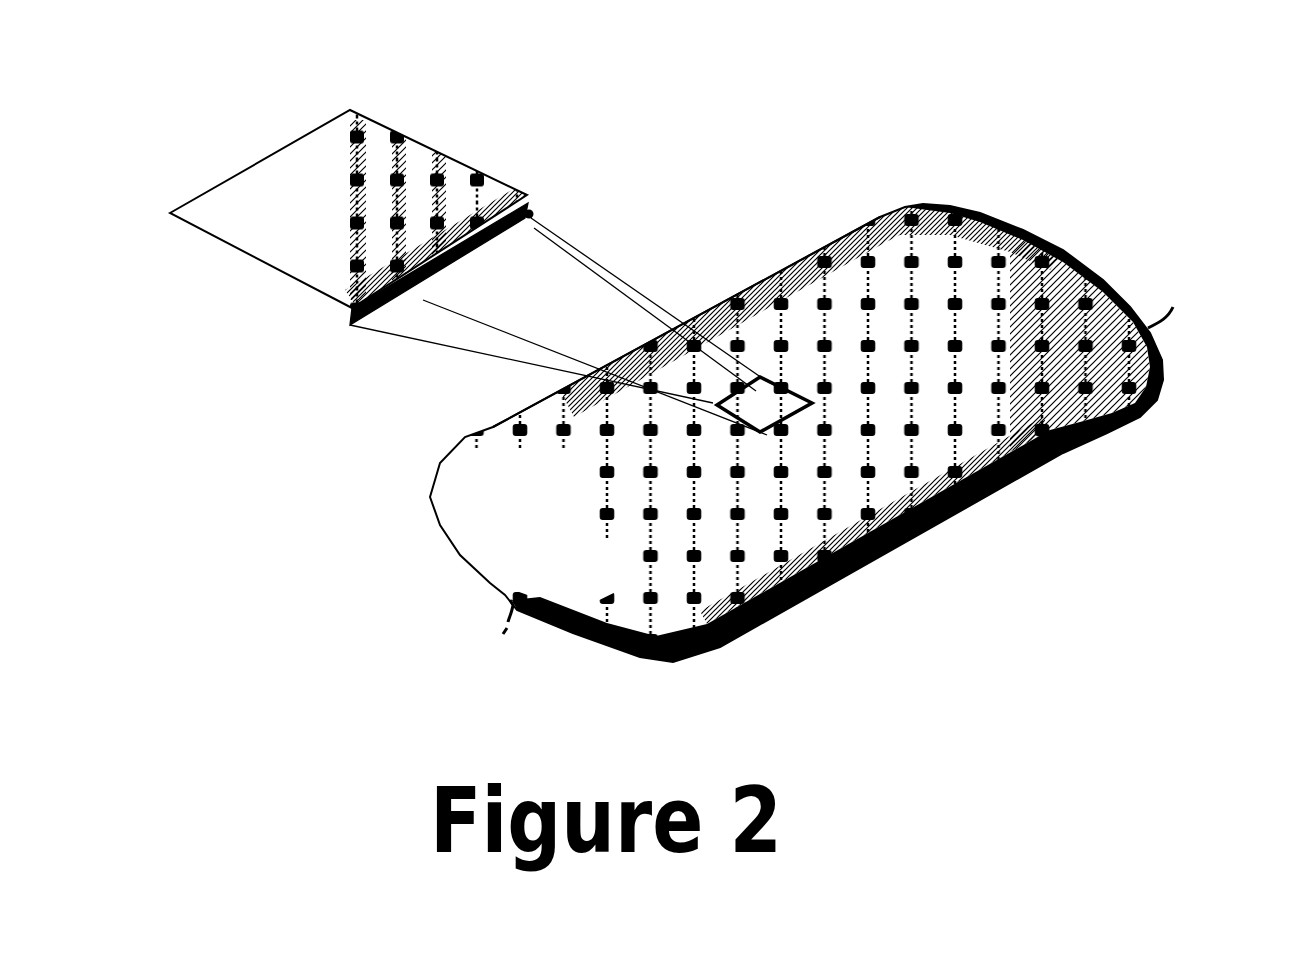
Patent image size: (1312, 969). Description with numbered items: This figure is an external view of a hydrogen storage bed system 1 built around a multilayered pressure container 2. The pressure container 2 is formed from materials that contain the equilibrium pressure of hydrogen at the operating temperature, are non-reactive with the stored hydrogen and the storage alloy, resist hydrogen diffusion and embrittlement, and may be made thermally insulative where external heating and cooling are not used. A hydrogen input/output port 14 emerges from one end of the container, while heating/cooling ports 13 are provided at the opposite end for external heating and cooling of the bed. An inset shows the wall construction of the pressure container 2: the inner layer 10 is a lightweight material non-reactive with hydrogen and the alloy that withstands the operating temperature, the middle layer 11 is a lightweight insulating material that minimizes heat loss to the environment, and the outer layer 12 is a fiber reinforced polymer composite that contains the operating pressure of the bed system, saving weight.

The storage bed system 1 is at (916, 574).
The pressure container 2 is at (547, 452).
The inner layer 10 is at (350, 325).
The middle layer 11 is at (528, 196).
The outer layer 12 is at (367, 142).
The heating/cooling ports 13 is at (1045, 215).
The hydrogen input/output port 14 is at (483, 592).